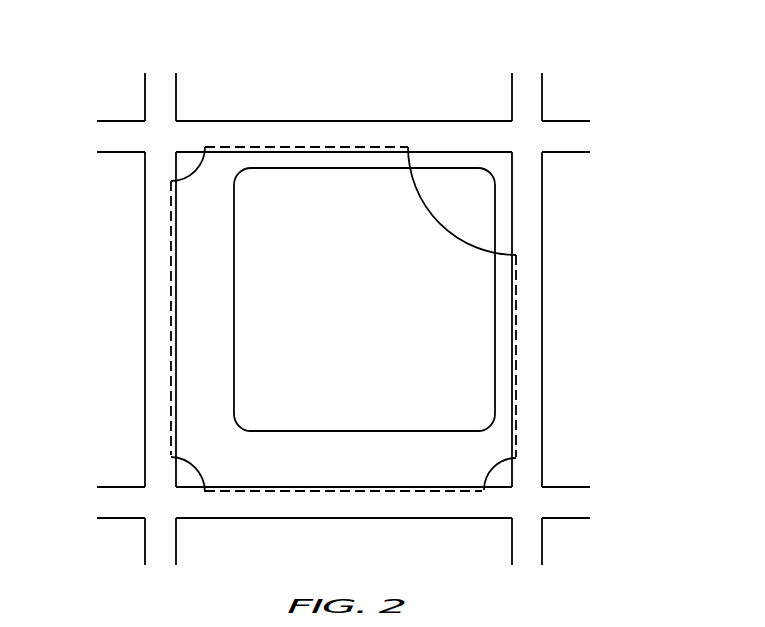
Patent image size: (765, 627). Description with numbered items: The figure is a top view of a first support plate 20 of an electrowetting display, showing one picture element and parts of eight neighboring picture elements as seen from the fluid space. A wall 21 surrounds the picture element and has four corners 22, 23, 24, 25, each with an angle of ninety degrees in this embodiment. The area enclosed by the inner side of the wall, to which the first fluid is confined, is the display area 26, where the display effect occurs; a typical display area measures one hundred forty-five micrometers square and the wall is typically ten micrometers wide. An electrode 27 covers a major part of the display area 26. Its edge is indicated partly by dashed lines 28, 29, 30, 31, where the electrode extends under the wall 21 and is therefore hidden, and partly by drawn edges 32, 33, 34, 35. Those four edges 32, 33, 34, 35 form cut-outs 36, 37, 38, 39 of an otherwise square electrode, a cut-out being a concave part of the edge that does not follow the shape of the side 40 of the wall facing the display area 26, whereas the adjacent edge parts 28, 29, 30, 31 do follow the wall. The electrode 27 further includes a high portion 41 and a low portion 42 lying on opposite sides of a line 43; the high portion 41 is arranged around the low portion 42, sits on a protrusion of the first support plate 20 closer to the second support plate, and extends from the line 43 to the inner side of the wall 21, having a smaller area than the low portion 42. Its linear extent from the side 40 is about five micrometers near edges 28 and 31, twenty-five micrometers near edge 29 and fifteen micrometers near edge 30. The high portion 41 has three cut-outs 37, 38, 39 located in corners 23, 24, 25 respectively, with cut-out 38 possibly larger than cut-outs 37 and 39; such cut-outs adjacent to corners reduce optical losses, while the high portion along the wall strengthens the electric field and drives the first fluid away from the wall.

The first support plate 20 is at (615, 58).
The wall 21 is at (535, 312).
The corner 22 is at (512, 152).
The corner 23 is at (517, 492).
The corner 24 is at (168, 487).
The corner 25 is at (178, 152).
The display area 26 is at (480, 342).
The electrode 27 is at (503, 368).
The dashed line 28 is at (515, 397).
The dashed line 29 is at (403, 492).
The dashed line 30 is at (170, 403).
The dashed line 31 is at (285, 147).
The edge 32 is at (465, 242).
The edge 33 is at (487, 470).
The edge 34 is at (202, 470).
The edge 35 is at (191, 178).
The cut-out 36 is at (483, 197).
The cut-out 37 is at (495, 480).
The cut-out 38 is at (183, 473).
The cut-out 39 is at (190, 160).
The side of the wall 40 is at (353, 487).
The high portion 41 is at (195, 312).
The low portion 42 is at (252, 280).
The line 43 is at (235, 243).